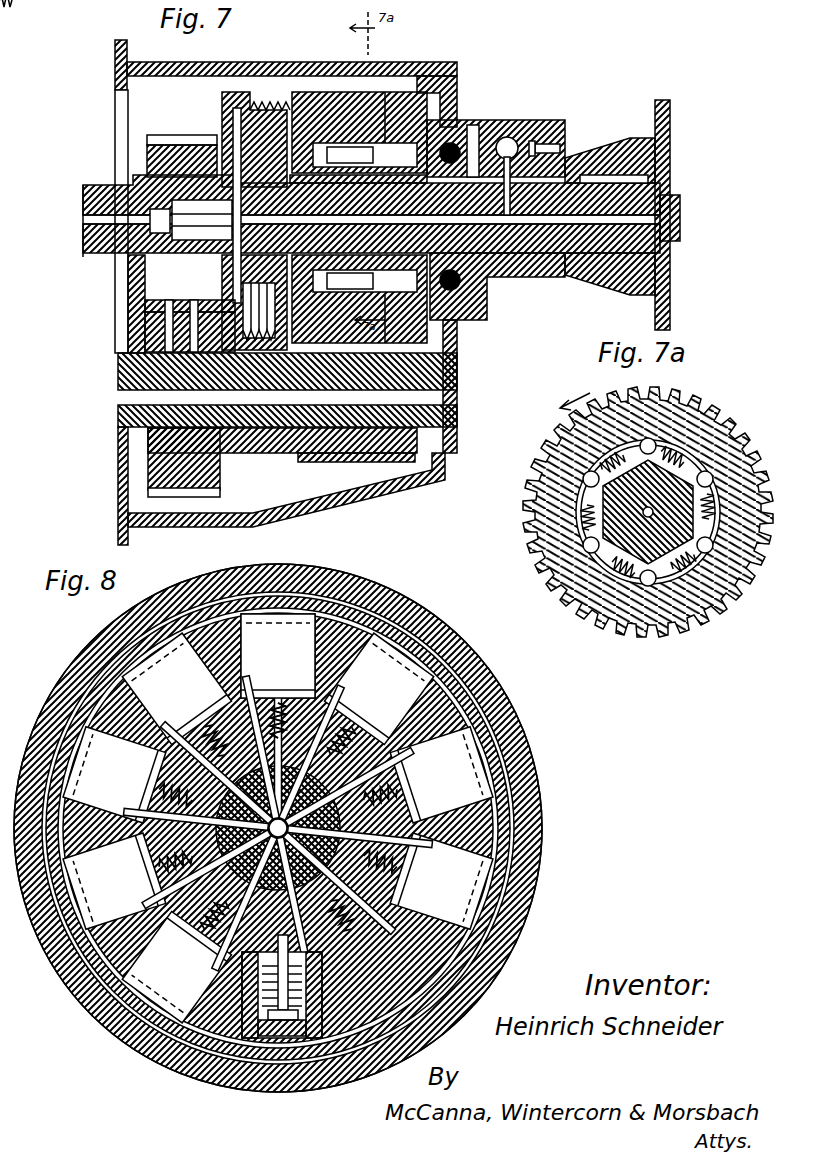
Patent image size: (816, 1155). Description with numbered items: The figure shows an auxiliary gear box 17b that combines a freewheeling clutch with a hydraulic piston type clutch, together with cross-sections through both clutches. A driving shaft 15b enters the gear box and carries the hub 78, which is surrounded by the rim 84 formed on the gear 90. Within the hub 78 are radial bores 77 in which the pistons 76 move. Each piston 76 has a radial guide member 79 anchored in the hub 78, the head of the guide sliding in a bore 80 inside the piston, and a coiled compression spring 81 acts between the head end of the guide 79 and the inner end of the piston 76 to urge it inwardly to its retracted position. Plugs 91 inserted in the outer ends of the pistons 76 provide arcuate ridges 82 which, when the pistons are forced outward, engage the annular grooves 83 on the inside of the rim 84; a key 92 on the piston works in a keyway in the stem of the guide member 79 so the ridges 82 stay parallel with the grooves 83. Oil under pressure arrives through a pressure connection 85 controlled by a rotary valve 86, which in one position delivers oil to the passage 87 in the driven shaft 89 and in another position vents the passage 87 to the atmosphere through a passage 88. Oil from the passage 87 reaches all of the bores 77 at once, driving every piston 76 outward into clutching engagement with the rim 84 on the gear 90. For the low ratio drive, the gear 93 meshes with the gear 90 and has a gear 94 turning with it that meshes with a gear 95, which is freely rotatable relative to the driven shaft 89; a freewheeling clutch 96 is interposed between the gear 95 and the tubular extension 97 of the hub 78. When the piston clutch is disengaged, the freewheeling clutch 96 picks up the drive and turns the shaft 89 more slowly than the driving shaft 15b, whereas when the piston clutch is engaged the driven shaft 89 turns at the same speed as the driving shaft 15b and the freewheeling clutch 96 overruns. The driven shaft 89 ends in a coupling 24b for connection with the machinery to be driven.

In FIG. 7, the shaft 15b is at (83, 257).
In FIG. 7, the auxiliary gear box 17b is at (440, 478).
In FIG. 7, the coupling 24b is at (672, 295).
In FIG. 7, the piston 76 is at (233, 327).
In FIG. 8, the piston 76 is at (383, 687).
In FIG. 7, the radial bore 77 is at (240, 313).
In FIG. 8, the radial bore 77 is at (420, 700).
In FIG. 7, the hub 78 is at (250, 137).
In FIG. 8, the hub 78 is at (512, 835).
In FIG. 8, the radial guide member 79 is at (330, 990).
In FIG. 8, the bore 80 is at (240, 978).
In FIG. 8, the coiled compression spring 81 is at (325, 973).
In FIG. 7, the arcuate ridge 82 is at (262, 300).
In FIG. 8, the arcuate ridge 82 is at (285, 1050).
In FIG. 7, the annular groove 83 is at (255, 102).
In FIG. 8, the annular groove 83 is at (528, 820).
In FIG. 7, the rim 84 is at (290, 92).
In FIG. 8, the rim 84 is at (538, 880).
In FIG. 7, the pressure connection 85 is at (553, 142).
In FIG. 7, the rotary valve 86 is at (507, 140).
In FIG. 7, the passage 87 is at (542, 217).
In FIG. 7A, the passage 87 is at (612, 568).
In FIG. 8, the passage 87 is at (160, 790).
In FIG. 7, the passage 88 is at (482, 140).
In FIG. 7, the driven shaft 89 is at (597, 252).
In FIG. 7A, the driven shaft 89 is at (649, 515).
In FIG. 8, the driven shaft 89 is at (378, 848).
In FIG. 7, the gear 90 is at (153, 137).
In FIG. 8, the plug 91 is at (260, 1035).
In FIG. 8, the key 92 is at (235, 960).
In FIG. 7, the gear 93 is at (185, 490).
In FIG. 7, the gear 94 is at (325, 460).
In FIG. 7, the gear 95 is at (395, 110).
In FIG. 7A, the gear 95 is at (712, 598).
In FIG. 7, the freewheeling clutch 96 is at (345, 148).
In FIG. 7A, the freewheeling clutch 96 is at (652, 440).
In FIG. 7, the tubular extension 97 is at (385, 160).
In FIG. 7A, the tubular extension 97 is at (600, 570).